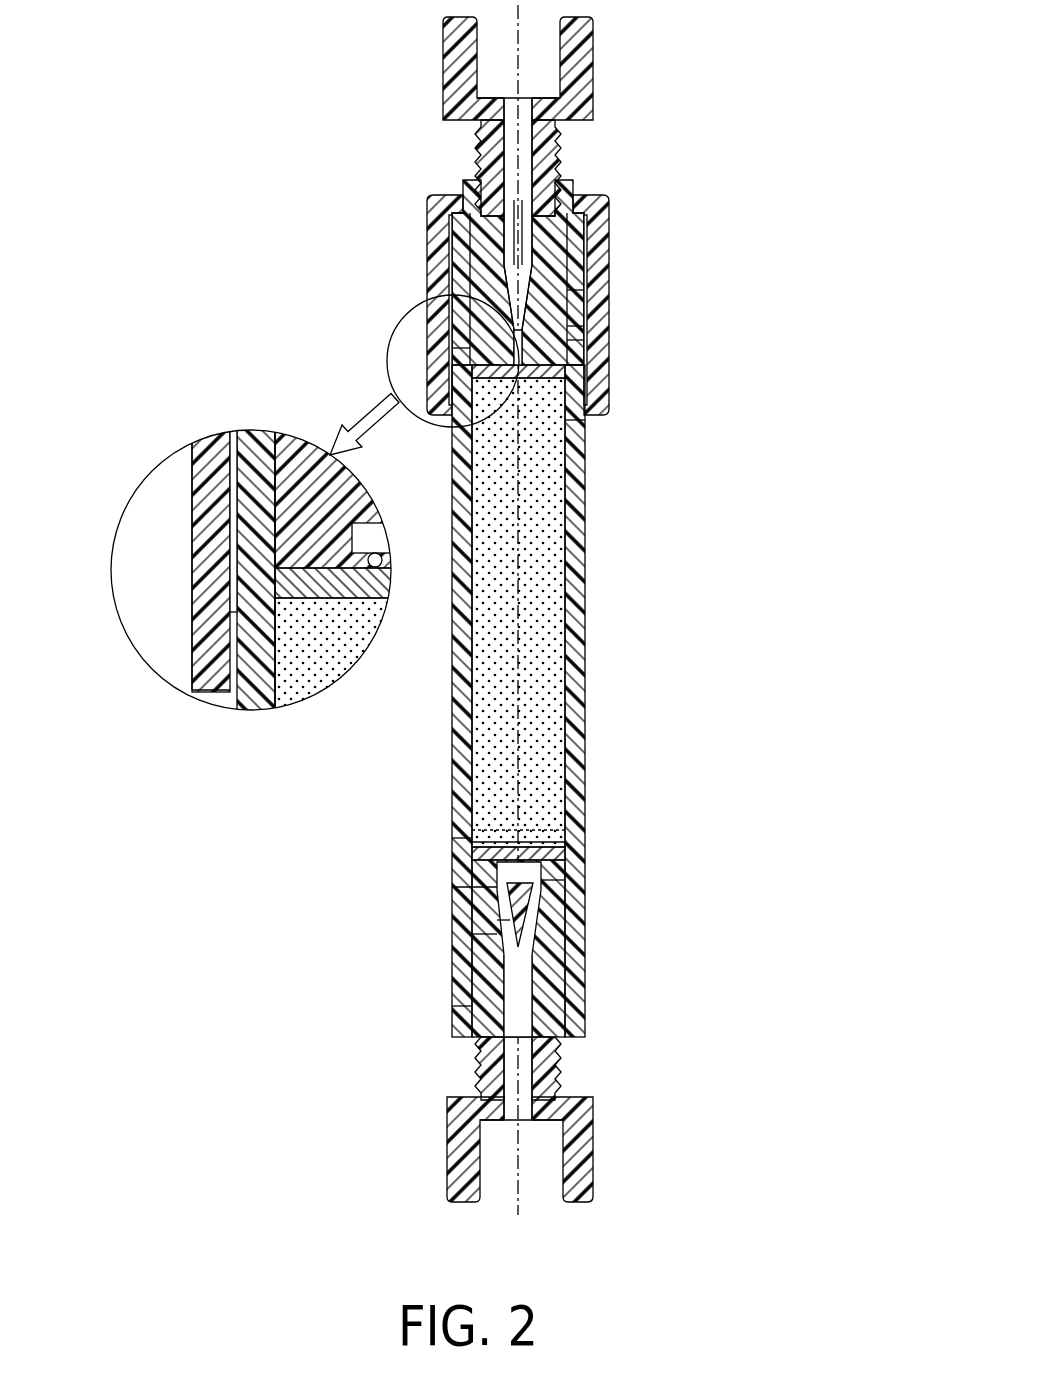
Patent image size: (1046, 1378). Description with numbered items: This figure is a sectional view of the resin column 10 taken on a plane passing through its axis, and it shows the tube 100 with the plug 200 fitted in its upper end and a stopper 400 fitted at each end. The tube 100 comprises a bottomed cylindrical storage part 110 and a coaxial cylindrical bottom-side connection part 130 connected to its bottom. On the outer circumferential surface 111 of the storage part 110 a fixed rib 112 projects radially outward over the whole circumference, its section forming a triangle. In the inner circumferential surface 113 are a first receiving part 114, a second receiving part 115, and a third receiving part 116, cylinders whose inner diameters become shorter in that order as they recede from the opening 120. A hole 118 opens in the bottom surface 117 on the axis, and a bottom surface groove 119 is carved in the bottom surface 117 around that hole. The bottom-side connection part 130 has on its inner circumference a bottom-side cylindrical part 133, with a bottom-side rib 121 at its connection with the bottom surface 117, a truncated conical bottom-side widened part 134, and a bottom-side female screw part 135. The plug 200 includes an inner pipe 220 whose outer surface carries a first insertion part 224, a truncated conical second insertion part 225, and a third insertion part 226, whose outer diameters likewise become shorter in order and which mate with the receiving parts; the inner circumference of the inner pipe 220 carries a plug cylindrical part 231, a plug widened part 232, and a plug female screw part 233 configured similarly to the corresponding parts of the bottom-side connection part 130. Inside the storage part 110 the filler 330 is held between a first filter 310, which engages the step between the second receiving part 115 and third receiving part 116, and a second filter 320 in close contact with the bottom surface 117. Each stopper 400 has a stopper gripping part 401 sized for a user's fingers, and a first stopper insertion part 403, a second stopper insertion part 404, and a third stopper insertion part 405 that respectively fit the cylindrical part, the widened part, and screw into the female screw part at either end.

The column 10 is at (788, 118).
The tube 100 is at (442, 474).
The storage part 110 is at (537, 701).
The outer circumferential surface 111 is at (588, 522).
The fixed rib 112 is at (603, 382).
The inner circumferential surface 113 is at (478, 605).
The first receiving part 114 is at (440, 216).
The second receiving part 115 is at (470, 302).
The third receiving part 116 is at (470, 347).
The bottom surface 117 is at (566, 842).
The hole 118 is at (566, 880).
The bottom surface groove 119 is at (566, 856).
The opening 120 is at (580, 206).
The bottom-side rib 121 is at (470, 838).
The bottom-side connection part 130 is at (588, 990).
The bottom-side cylindrical part 133 is at (492, 920).
The bottom-side widened part 134 is at (548, 920).
The bottom-side female screw part 135 is at (455, 1006).
The plug 200 is at (612, 256).
The inner pipe 220 is at (470, 342).
The first insertion part 224 is at (605, 248).
The second insertion part 225 is at (592, 290).
The third insertion part 226 is at (605, 342).
The plug cylindrical part 231 is at (505, 332).
The plug widened part 232 is at (466, 282).
The plug female screw part 233 is at (498, 182).
The first filter 310 is at (588, 432).
The second filter 320 is at (560, 830).
The filler 330 is at (560, 612).
The stopper 400 is at (596, 41).
The stopper gripping part 401 is at (596, 96).
The first stopper insertion part 403 is at (560, 150).
The second stopper insertion part 404 is at (592, 326).
The third stopper insertion part 405 is at (590, 366).